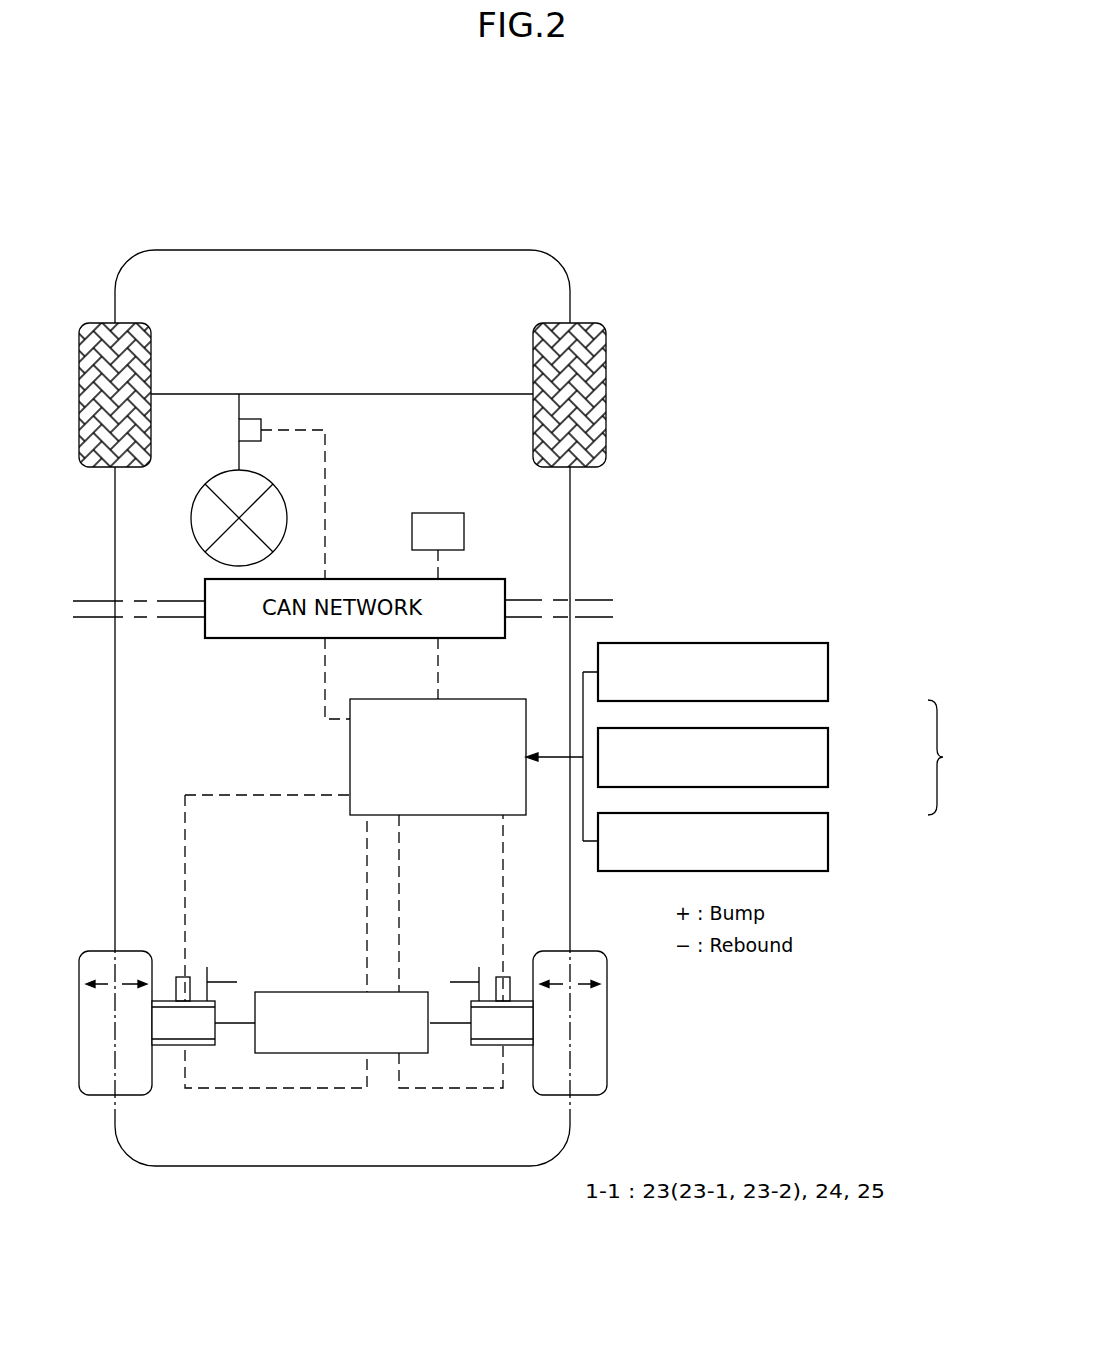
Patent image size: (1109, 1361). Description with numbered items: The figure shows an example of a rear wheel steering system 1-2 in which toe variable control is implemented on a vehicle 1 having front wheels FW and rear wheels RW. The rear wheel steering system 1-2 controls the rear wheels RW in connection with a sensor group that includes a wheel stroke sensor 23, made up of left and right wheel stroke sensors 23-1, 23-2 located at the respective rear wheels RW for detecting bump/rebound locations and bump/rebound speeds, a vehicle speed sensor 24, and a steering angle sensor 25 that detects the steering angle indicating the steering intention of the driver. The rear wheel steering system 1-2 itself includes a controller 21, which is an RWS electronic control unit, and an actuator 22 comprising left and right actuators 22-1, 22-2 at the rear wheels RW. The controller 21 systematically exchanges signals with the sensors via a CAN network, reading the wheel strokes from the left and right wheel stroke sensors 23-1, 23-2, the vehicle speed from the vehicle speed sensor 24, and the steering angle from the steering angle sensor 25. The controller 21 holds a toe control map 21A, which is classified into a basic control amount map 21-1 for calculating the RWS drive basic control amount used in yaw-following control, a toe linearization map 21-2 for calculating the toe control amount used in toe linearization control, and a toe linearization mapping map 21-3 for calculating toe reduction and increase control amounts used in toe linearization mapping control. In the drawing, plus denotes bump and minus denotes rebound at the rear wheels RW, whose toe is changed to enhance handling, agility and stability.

The vehicle 1 is at (343, 250).
The rear wheel steering system 1-2 is at (612, 572).
The controller 21 is at (372, 760).
The basic control amount map 21-1 is at (828, 672).
The toe linearization map 21-2 is at (828, 757).
The toe linearization mapping map 21-3 is at (828, 842).
The toe control map 21A is at (956, 757).
The actuator 22 is at (403, 1262).
The left actuator 22-1 is at (200, 1040).
The right actuator 22-2 is at (485, 1040).
The wheel stroke sensor 23 is at (333, 853).
The left wheel stroke sensor 23-1 is at (185, 987).
The right wheel stroke sensor 23-2 is at (497, 983).
The vehicle speed sensor 24 is at (439, 524).
The steering angle sensor 25 is at (252, 425).
The front wheel FW is at (103, 366).
The rear wheel RW is at (100, 1080).